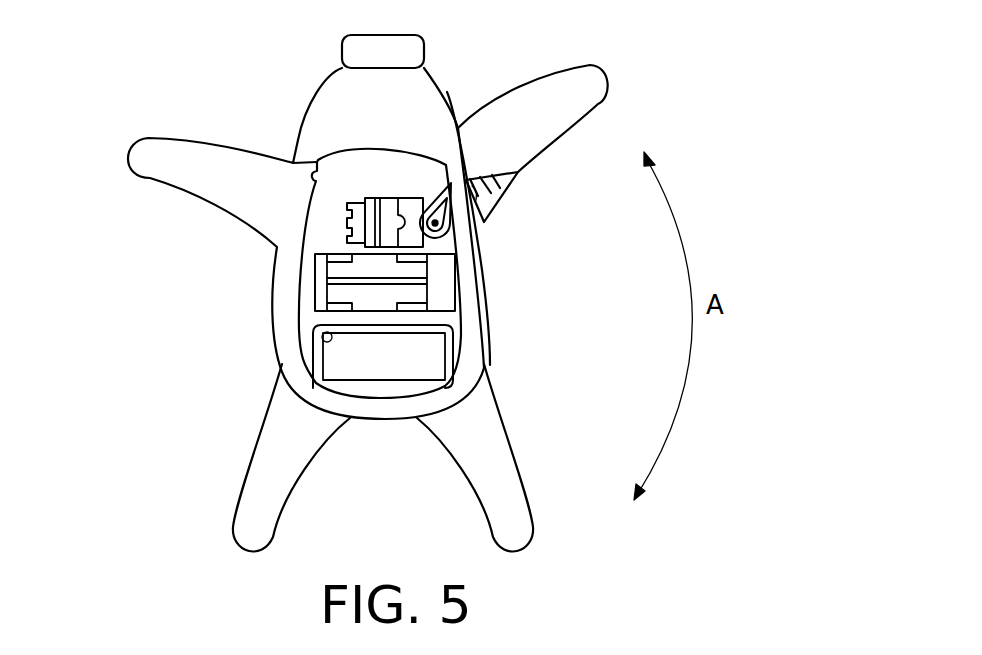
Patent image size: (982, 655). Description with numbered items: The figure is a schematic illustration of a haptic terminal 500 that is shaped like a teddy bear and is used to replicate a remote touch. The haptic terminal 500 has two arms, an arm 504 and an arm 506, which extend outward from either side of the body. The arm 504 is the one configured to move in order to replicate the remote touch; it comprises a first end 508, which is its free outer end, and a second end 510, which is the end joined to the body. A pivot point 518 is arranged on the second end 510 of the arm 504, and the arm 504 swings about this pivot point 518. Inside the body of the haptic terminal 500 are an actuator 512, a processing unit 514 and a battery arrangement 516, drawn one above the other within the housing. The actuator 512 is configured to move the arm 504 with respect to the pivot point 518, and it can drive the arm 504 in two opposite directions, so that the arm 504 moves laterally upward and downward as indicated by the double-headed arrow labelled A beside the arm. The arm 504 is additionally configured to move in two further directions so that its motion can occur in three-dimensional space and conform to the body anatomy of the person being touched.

The haptic terminal 500 is at (752, 53).
The arm 504 is at (573, 78).
The arm 506 is at (128, 155).
The first end 508 is at (610, 82).
The second end 510 is at (440, 215).
The actuator 512 is at (397, 199).
The processing unit 514 is at (345, 360).
The battery arrangement 516 is at (348, 293).
The pivot point 518 is at (440, 232).